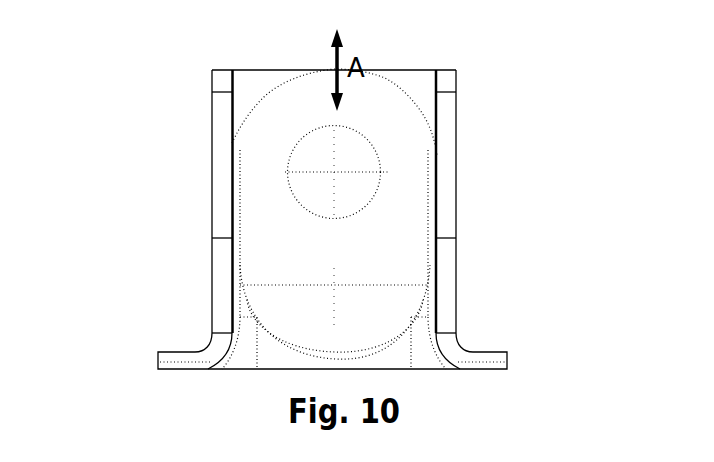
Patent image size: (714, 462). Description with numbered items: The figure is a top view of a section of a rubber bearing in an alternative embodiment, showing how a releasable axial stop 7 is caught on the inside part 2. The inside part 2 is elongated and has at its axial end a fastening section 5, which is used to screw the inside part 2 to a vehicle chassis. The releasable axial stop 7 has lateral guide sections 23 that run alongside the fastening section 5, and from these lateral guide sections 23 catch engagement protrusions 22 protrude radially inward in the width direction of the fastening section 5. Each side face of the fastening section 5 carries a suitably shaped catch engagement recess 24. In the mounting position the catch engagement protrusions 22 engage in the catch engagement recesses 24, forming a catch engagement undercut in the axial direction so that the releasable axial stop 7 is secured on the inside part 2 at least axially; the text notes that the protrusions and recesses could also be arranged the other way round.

The inside part 2 is at (257, 137).
The fastening section 5 is at (378, 115).
The releasable axial stop 7 is at (467, 120).
The catch engagement protrusions 22 is at (222, 203).
The lateral guide sections 23 is at (222, 293).
The catch engagement recess 24 is at (420, 212).